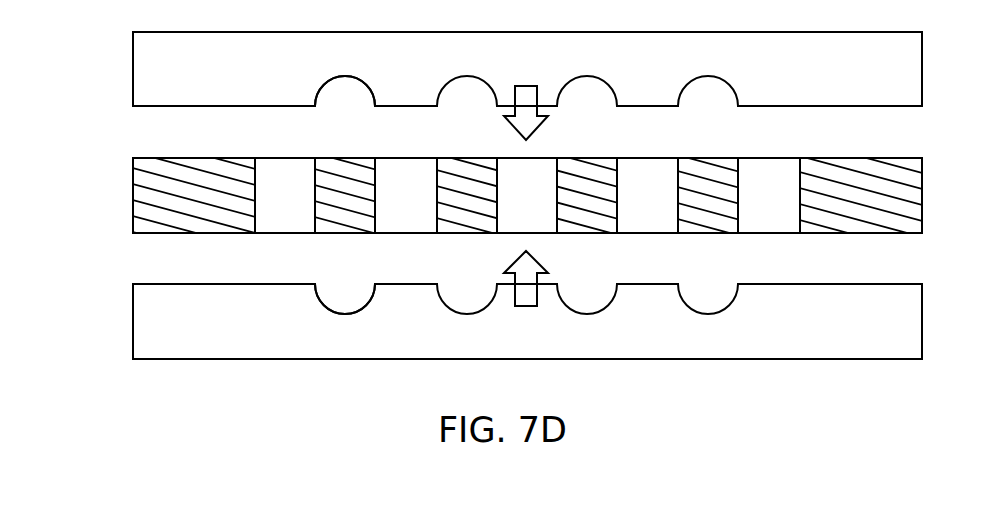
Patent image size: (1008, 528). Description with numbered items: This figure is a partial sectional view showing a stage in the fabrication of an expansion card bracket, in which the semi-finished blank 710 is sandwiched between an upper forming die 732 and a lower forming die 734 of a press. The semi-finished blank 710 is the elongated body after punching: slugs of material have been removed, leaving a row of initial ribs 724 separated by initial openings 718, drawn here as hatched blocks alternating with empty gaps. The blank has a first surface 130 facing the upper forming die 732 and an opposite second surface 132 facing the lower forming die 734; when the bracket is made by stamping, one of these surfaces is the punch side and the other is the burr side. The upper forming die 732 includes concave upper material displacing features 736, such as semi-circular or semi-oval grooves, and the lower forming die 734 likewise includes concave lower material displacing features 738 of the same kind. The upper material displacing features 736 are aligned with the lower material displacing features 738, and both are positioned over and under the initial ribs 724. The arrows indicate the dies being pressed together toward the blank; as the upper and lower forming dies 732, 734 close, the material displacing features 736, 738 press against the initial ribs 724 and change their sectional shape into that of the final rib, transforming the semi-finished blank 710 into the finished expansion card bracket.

The semi-finished blank 710 is at (110, 191).
The first surface 130 is at (187, 160).
The second surface 132 is at (187, 225).
The initial openings 718 is at (285, 162).
The initial ribs 724 is at (365, 189).
The upper forming die 732 is at (152, 64).
The lower forming die 734 is at (133, 307).
The upper material displacing features 736 is at (365, 82).
The lower material displacing features 738 is at (322, 305).